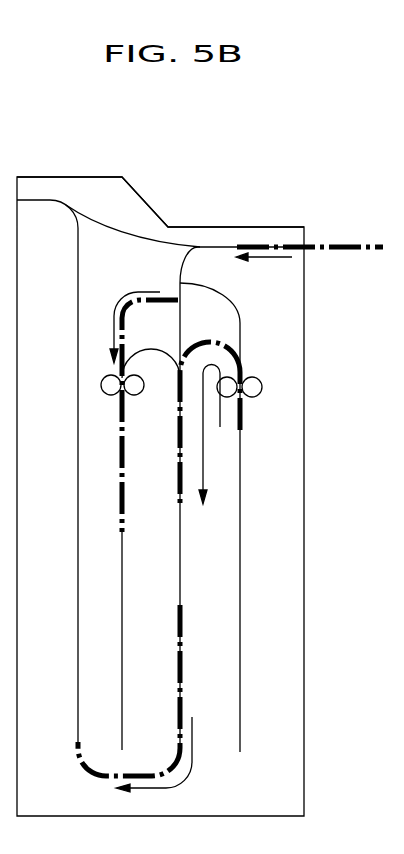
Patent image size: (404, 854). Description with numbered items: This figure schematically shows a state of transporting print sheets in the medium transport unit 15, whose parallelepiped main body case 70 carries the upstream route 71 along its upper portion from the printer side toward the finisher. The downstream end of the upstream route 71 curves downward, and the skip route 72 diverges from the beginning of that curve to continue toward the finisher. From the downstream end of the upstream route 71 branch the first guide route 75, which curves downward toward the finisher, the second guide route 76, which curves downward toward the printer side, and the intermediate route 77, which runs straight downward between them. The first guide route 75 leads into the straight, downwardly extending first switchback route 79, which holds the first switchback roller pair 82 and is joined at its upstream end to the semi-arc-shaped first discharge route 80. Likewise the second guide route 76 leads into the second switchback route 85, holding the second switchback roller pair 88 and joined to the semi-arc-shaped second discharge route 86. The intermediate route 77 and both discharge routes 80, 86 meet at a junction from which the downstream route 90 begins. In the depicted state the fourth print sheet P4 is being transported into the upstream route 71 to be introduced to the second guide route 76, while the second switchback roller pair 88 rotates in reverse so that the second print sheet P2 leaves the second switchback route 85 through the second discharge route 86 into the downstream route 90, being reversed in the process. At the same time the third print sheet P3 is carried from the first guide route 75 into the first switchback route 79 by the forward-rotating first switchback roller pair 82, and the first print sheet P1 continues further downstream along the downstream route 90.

The medium transport unit 15 is at (233, 162).
The main body case 70 is at (128, 177).
The upstream route 71 is at (283, 245).
The skip route 72 is at (100, 222).
The first guide route 75 is at (120, 306).
The second guide route 76 is at (240, 315).
The intermediate route 77 is at (183, 327).
The first switchback route 79 is at (124, 703).
The first discharge route 80 is at (152, 350).
The first switchback roller pair 82 is at (104, 392).
The second switchback route 85 is at (242, 538).
The second discharge route 86 is at (238, 347).
The second switchback roller pair 88 is at (255, 378).
The downstream route 90 is at (183, 525).
The first print sheet P1 is at (183, 650).
The second print sheet P2 is at (242, 410).
The third print sheet P3 is at (124, 493).
The fourth print sheet P4 is at (341, 245).